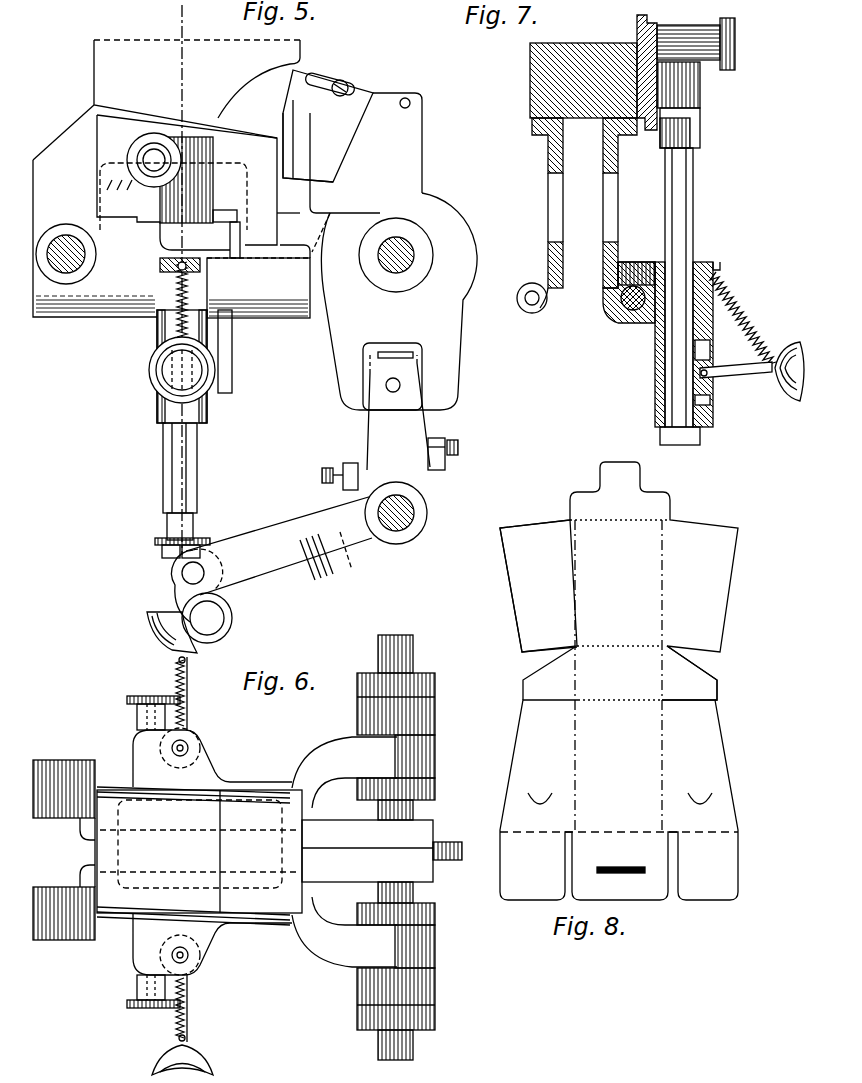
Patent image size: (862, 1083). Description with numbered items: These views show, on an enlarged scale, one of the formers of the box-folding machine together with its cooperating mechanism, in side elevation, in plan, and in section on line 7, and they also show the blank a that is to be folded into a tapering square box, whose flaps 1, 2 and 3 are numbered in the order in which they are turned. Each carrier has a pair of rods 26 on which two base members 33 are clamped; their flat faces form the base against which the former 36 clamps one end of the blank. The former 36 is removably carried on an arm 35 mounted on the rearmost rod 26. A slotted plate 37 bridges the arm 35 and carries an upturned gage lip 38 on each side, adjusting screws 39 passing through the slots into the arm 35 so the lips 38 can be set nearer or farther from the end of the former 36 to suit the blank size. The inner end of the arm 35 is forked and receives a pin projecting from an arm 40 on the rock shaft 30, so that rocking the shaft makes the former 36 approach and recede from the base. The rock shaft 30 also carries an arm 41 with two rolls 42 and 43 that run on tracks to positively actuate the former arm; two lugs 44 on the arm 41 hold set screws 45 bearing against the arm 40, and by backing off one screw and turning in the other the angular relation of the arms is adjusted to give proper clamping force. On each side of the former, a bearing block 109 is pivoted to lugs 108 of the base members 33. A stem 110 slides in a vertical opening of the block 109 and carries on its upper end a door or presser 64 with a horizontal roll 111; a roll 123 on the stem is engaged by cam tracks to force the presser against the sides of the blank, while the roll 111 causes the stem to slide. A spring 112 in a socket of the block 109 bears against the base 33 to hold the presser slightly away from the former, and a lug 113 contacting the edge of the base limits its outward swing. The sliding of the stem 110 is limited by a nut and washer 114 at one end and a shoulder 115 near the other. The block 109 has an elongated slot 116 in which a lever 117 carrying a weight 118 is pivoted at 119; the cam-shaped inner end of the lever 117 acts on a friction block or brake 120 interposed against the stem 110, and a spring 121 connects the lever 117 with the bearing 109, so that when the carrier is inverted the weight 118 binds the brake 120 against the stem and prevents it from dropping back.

In FIG. 5, the blank a is at (94, 57).
In FIG. 7, the blank a is at (531, 43).
In FIG. 8, the blank a is at (635, 724).
In FIG. 8, the flap 1 is at (603, 586).
In FIG. 8, the flap 2 is at (630, 673).
In FIG. 8, the flap 3 is at (620, 784).
In FIG. 5, the section line 7 is at (184, 470).
In FIG. 5, the rods 26 is at (69, 260).
In FIG. 6, the rods 26 is at (395, 663).
In FIG. 5, the rock shaft 30 is at (398, 527).
In FIG. 5, the base members 33 is at (80, 137).
In FIG. 6, the base members 33 is at (67, 886).
In FIG. 7, the base members 33 is at (603, 162).
In FIG. 5, the arm 35 is at (384, 148).
In FIG. 6, the arm 35 is at (363, 758).
In FIG. 5, the former 36 is at (216, 50).
In FIG. 6, the former 36 is at (279, 851).
In FIG. 7, the former 36 is at (557, 82).
In FIG. 5, the plate 37 is at (347, 113).
In FIG. 5, the gage lip 38 is at (290, 115).
In FIG. 5, the adjusting screws 39 is at (342, 82).
In FIG. 5, the arm 40 is at (400, 429).
In FIG. 5, the arm 41 is at (310, 560).
In FIG. 5, the roll 42 is at (178, 578).
In FIG. 5, the roll 43 is at (232, 625).
In FIG. 5, the lugs 44 is at (353, 462).
In FIG. 5, the set screws 45 is at (342, 467).
In FIG. 6, the door or presser 64 is at (258, 778).
In FIG. 7, the door or presser 64 is at (645, 36).
In FIG. 7, the lugs 108 is at (534, 313).
In FIG. 5, the bearing block 109 is at (170, 318).
In FIG. 7, the bearing block 109 is at (656, 381).
In FIG. 5, the rod or stem 110 is at (176, 479).
In FIG. 6, the rod or stem 110 is at (187, 745).
In FIG. 7, the rod or stem 110 is at (684, 210).
In FIG. 6, the horizontal roll 111 is at (150, 698).
In FIG. 7, the horizontal roll 111 is at (737, 55).
In FIG. 7, the spring 112 is at (638, 258).
In FIG. 7, the lug 113 is at (617, 302).
In FIG. 5, the nut and washer 114 is at (158, 540).
In FIG. 7, the nut and washer 114 is at (703, 432).
In FIG. 7, the shoulder 115 is at (699, 148).
In FIG. 5, the slot 116 is at (167, 344).
In FIG. 7, the slot 116 is at (711, 347).
In FIG. 6, the lever 117 is at (188, 698).
In FIG. 7, the lever 117 is at (740, 376).
In FIG. 5, the weight 118 is at (160, 383).
In FIG. 6, the weight 118 is at (200, 1060).
In FIG. 7, the weight 118 is at (787, 402).
In FIG. 7, the pivot 119 is at (711, 385).
In FIG. 7, the friction block or brake 120 is at (704, 400).
In FIG. 5, the spring 121 is at (186, 298).
In FIG. 6, the spring 121 is at (188, 688).
In FIG. 7, the spring 121 is at (730, 308).
In FIG. 7, the roll 123 is at (690, 89).